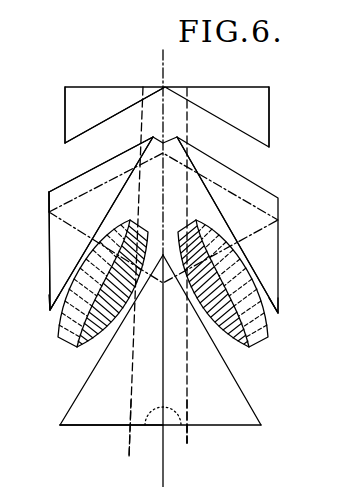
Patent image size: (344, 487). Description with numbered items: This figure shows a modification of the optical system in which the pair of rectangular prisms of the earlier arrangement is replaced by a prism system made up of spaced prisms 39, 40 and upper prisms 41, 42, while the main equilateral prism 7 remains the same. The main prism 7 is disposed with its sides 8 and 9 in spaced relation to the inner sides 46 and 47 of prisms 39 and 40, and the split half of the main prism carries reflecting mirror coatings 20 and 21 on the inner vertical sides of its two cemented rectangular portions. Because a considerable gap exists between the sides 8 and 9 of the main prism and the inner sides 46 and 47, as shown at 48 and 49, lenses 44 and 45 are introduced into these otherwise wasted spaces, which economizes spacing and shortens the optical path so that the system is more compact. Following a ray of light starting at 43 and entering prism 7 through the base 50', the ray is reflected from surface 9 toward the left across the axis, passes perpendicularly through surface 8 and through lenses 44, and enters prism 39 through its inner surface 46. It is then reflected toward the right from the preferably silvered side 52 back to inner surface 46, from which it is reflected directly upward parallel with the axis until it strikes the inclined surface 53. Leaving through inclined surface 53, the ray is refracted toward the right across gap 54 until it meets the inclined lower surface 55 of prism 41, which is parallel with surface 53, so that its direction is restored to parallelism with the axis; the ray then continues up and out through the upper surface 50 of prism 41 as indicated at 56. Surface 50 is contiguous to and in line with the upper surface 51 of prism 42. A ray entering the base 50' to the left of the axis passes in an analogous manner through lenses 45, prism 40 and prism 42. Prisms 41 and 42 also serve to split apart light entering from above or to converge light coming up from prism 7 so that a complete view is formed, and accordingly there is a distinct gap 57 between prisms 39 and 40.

The equilateral prism 7 is at (241, 426).
The side of prism 7 8 is at (71, 410).
The side of prism 7 9 is at (257, 413).
The reflecting mirror coating 20 is at (128, 474).
The reflecting mirror coating 21 is at (179, 431).
The spaced prism 39 is at (50, 207).
The spaced prism 40 is at (272, 252).
The upper prism 41 is at (66, 113).
The upper prism 42 is at (262, 113).
The starting point of light ray 43 is at (190, 450).
The lenses 44 is at (56, 352).
The lenses 45 is at (259, 359).
The inner side of prism 39 46 is at (116, 201).
The inner side of prism 40 47 is at (207, 194).
The gap 48 is at (45, 314).
The gap 49 is at (277, 329).
The upper surface of prism 41 50 is at (167, 103).
The base of prism 7 50' is at (111, 443).
The upper surface of prism 42 51 is at (187, 88).
The silvered side of prism 39 52 is at (50, 263).
The inclined surface of prism 39 53 is at (57, 188).
The gap 54 is at (101, 164).
The inclined lower surface of prism 41 55 is at (115, 112).
The exit of light ray 56 is at (143, 87).
The gap 57 is at (174, 130).